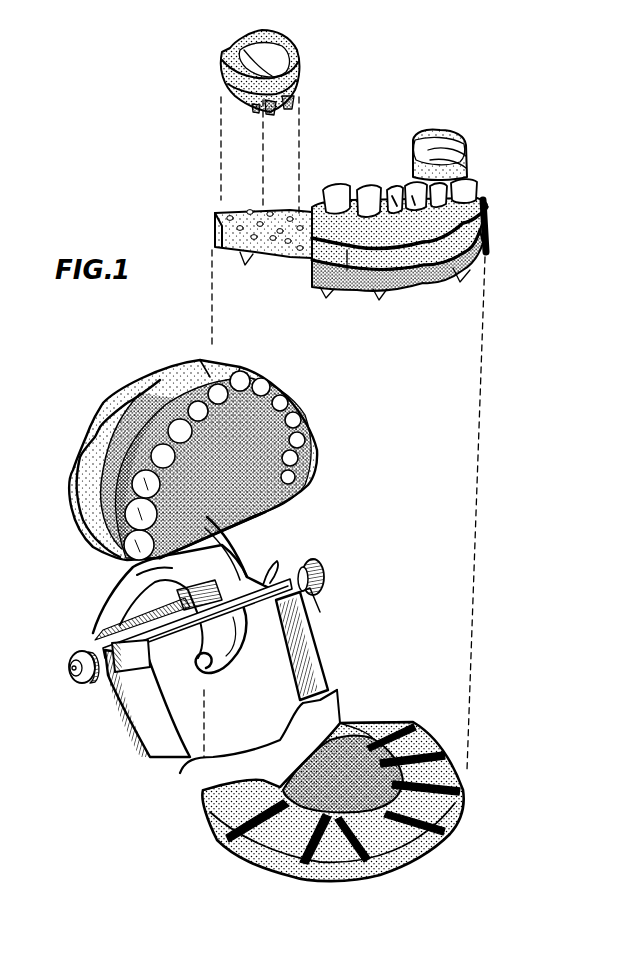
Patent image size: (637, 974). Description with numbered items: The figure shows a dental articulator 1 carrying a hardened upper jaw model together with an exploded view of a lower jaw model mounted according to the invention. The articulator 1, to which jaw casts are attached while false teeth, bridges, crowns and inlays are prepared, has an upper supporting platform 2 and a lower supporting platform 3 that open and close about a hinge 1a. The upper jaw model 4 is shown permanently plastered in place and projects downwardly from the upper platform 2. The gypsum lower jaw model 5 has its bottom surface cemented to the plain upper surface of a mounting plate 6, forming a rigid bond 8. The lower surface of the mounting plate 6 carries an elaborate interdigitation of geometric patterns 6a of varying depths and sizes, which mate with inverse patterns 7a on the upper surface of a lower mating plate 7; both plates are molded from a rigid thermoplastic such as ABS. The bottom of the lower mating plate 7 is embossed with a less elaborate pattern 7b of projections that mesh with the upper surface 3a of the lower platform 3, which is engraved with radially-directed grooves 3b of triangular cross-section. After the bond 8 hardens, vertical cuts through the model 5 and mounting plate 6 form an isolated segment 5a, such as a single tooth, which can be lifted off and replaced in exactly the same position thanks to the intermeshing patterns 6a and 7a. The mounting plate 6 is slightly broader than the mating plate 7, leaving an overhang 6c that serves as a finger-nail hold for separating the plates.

The articulator 1 is at (120, 733).
The hinge 1a is at (68, 660).
The upper supporting platform 2 is at (92, 430).
The lower supporting platform 3 is at (387, 870).
The upper surface of supporting platform 3a is at (390, 717).
The radially-directed grooves 3b is at (462, 790).
The upper jaw model 4 is at (307, 437).
The lower jaw model 5 is at (440, 133).
The isolated segment 5a is at (297, 53).
The mounting plate 6 is at (490, 203).
The geometric patterns 6a is at (300, 87).
The overhang 6c is at (312, 290).
The lower mating plate 7 is at (427, 284).
The inverse patterns 7a is at (283, 220).
The pattern on bottom surface 7b is at (379, 300).
The rigid bond 8 is at (347, 266).